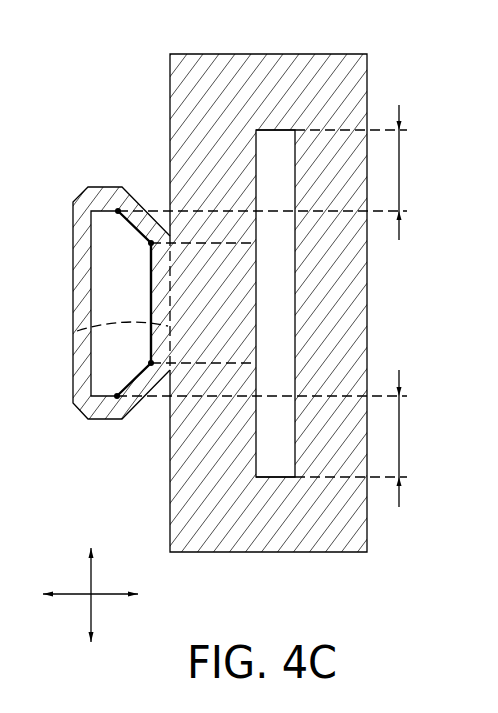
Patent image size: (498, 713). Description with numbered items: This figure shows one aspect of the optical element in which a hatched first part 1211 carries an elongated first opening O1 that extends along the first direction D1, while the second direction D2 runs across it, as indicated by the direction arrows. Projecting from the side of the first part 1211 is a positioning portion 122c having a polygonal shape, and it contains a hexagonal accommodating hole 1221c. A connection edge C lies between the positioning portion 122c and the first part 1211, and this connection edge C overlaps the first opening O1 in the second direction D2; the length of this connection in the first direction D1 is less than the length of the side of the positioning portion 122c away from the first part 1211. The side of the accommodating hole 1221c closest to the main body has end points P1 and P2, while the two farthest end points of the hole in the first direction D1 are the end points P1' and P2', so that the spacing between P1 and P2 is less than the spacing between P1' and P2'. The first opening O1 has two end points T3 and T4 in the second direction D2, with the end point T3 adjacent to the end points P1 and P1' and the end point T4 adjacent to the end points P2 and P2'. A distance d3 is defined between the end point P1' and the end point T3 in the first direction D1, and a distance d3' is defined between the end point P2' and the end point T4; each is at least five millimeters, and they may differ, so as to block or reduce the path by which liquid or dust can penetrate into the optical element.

The first part 1211 is at (223, 87).
The first opening O1 is at (277, 147).
The end point T3 is at (295, 130).
The end point T4 is at (296, 478).
The distance d3 is at (273, 172).
The distance d3' is at (274, 438).
The positioning portion 122c is at (90, 204).
The accommodating hole 1221c is at (110, 352).
The end point P1' is at (75, 237).
The end point P1 is at (93, 275).
The end point P2 is at (155, 403).
The end point P2' is at (102, 430).
The connection edge C is at (77, 331).
The first direction D1 is at (95, 582).
The second direction D2 is at (108, 596).